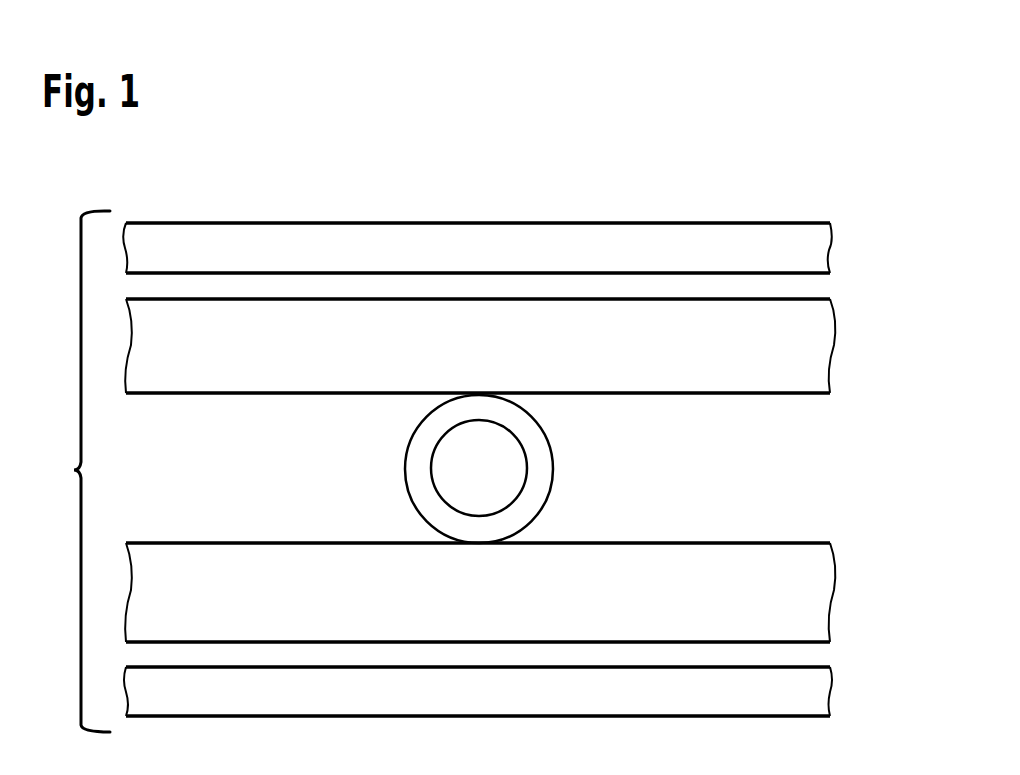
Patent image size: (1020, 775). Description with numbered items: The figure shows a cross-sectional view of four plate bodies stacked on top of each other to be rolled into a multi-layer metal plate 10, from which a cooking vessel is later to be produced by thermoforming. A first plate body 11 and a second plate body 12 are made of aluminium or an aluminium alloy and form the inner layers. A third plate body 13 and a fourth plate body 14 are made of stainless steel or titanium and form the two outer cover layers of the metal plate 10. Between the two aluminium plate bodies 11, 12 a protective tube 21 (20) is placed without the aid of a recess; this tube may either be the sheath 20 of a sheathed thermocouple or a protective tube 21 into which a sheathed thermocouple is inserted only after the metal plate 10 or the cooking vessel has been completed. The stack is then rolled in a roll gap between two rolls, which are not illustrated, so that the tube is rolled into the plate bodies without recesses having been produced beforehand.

The metal plate 10 is at (74, 470).
The first plate body 11 is at (805, 342).
The second plate body 12 is at (805, 588).
The third plate body 13 is at (805, 250).
The fourth plate body 14 is at (805, 692).
The sheath 20 is at (560, 469).
The protective tube 21 is at (537, 465).